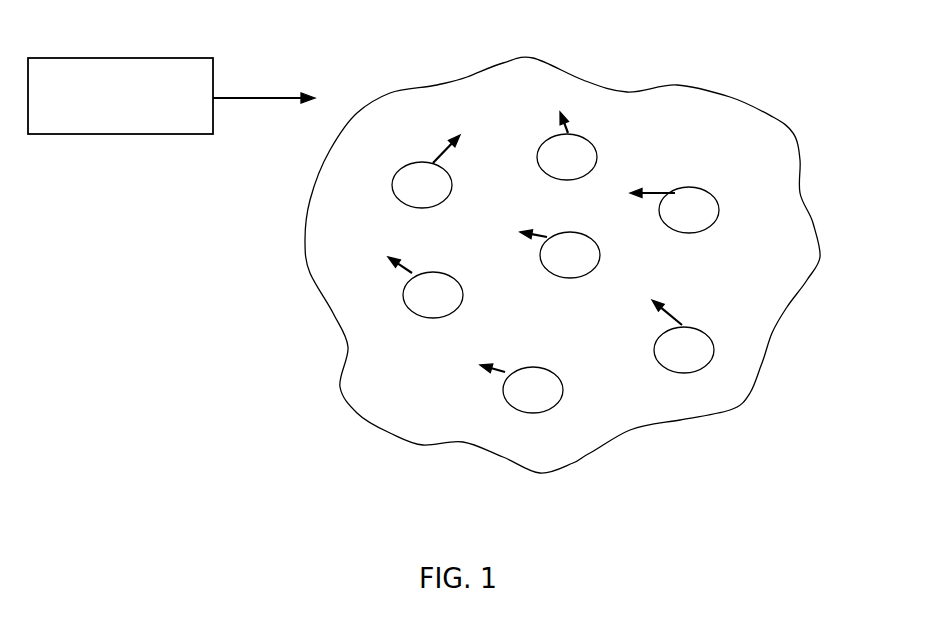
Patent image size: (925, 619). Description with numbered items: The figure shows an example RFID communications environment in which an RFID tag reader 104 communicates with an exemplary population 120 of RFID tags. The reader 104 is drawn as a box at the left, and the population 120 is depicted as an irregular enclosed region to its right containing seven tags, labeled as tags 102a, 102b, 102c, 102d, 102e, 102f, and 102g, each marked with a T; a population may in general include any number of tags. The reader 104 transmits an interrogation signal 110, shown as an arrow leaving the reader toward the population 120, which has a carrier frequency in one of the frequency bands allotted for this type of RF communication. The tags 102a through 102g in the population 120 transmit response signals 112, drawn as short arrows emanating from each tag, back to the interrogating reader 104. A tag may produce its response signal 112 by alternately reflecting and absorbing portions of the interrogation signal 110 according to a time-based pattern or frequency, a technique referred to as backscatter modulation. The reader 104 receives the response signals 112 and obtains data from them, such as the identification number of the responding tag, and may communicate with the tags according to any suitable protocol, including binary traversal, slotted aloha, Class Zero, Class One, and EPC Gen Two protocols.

The RFID tag reader 104 is at (118, 135).
The interrogation signal 110 is at (264, 84).
The response signal 112 is at (522, 245).
The population of RFID tags 120 is at (737, 413).
The RFID tag 102a is at (418, 197).
The RFID tag 102b is at (567, 172).
The RFID tag 102c is at (690, 221).
The RFID tag 102d is at (684, 361).
The RFID tag 102e is at (533, 402).
The RFID tag 102f is at (433, 308).
The RFID tag 102g is at (570, 268).